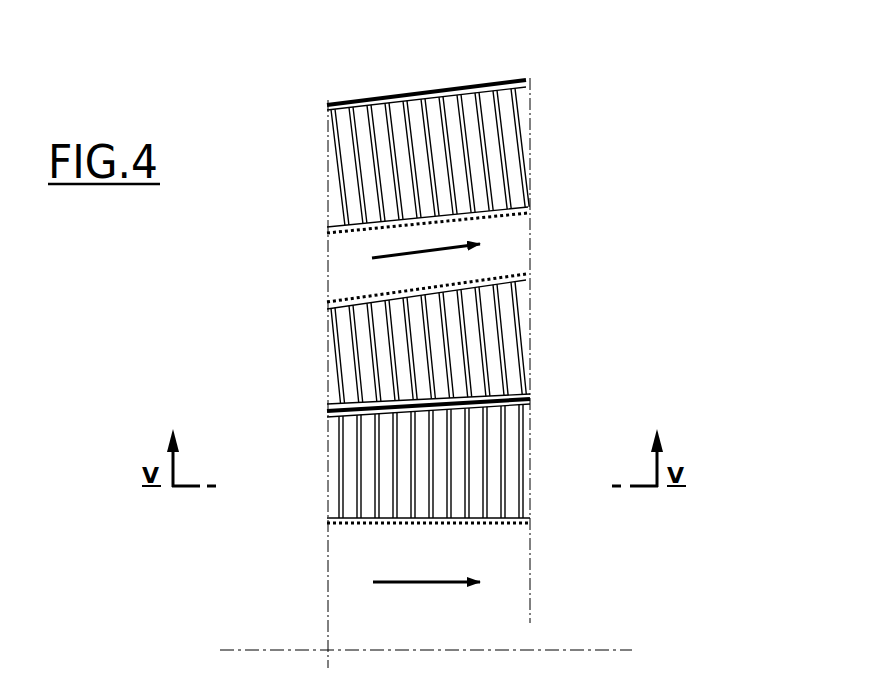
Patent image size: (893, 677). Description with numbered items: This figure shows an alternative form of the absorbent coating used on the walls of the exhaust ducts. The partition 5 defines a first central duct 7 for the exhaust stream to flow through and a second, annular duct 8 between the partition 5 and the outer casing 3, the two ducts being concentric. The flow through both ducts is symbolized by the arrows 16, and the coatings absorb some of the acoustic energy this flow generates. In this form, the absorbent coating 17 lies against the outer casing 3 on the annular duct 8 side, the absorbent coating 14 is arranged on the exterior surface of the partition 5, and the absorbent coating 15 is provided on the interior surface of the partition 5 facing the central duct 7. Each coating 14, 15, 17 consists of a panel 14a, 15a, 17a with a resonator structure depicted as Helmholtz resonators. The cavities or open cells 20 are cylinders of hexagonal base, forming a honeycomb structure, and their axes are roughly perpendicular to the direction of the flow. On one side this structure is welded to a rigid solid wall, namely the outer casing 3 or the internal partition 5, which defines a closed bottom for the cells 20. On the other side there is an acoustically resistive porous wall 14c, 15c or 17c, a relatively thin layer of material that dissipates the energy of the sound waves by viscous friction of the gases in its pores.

The outer casing 3 is at (392, 92).
The absorbent coating 17 is at (429, 165).
The panel 17a is at (360, 132).
The acoustically resistive porous wall 17c is at (345, 235).
The cells 20 is at (380, 176).
The annular duct 8 is at (505, 235).
The arrows 16 is at (372, 262).
The absorbent coating 14 is at (429, 339).
The acoustically resistive porous wall 14c is at (335, 291).
The panel 14a is at (352, 377).
The partition 5 is at (345, 415).
The absorbent coating 15 is at (429, 469).
The panel 15a is at (360, 480).
The acoustically resistive porous wall 15c is at (336, 528).
The central duct 7 is at (507, 552).